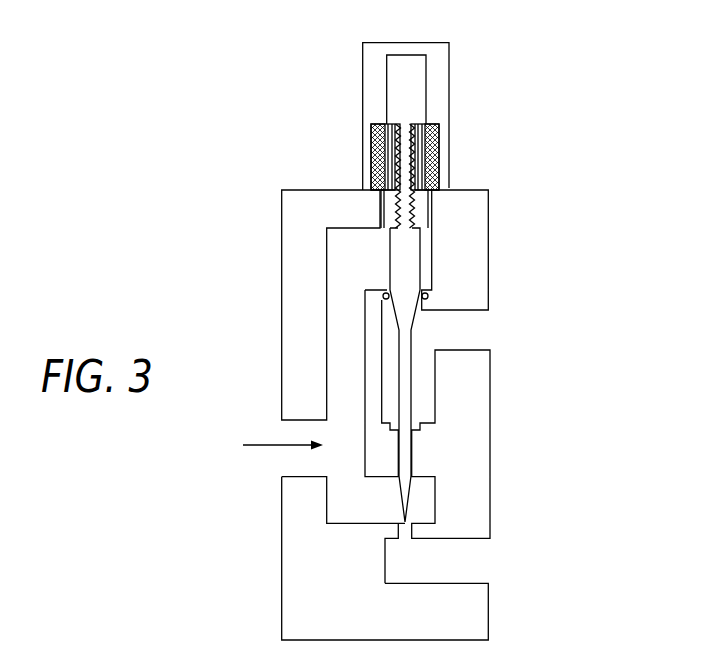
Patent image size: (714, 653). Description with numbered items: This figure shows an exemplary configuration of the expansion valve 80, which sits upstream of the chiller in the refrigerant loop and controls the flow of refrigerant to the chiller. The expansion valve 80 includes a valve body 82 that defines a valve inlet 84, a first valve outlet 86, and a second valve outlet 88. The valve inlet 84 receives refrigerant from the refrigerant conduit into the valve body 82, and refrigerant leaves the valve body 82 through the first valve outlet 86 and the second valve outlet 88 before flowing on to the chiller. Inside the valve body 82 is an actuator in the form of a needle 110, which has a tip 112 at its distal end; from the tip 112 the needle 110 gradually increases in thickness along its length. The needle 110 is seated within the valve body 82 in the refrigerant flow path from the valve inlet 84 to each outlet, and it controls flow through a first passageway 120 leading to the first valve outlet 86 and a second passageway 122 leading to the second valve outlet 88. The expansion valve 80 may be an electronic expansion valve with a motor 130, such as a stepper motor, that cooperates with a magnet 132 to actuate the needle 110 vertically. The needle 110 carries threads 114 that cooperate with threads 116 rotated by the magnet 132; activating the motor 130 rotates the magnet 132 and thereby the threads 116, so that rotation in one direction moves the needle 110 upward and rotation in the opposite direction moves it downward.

The expansion valve 80 is at (301, 160).
The valve body 82 is at (282, 262).
The valve inlet 84 is at (282, 420).
The first valve outlet 86 is at (488, 538).
The second valve outlet 88 is at (487, 311).
The needle 110 is at (413, 397).
The tip 112 is at (403, 521).
The threads 114 is at (415, 212).
The threads 116 is at (440, 173).
The first passageway 120 is at (398, 540).
The second passageway 122 is at (387, 298).
The motor 130 is at (440, 137).
The magnet 132 is at (387, 123).